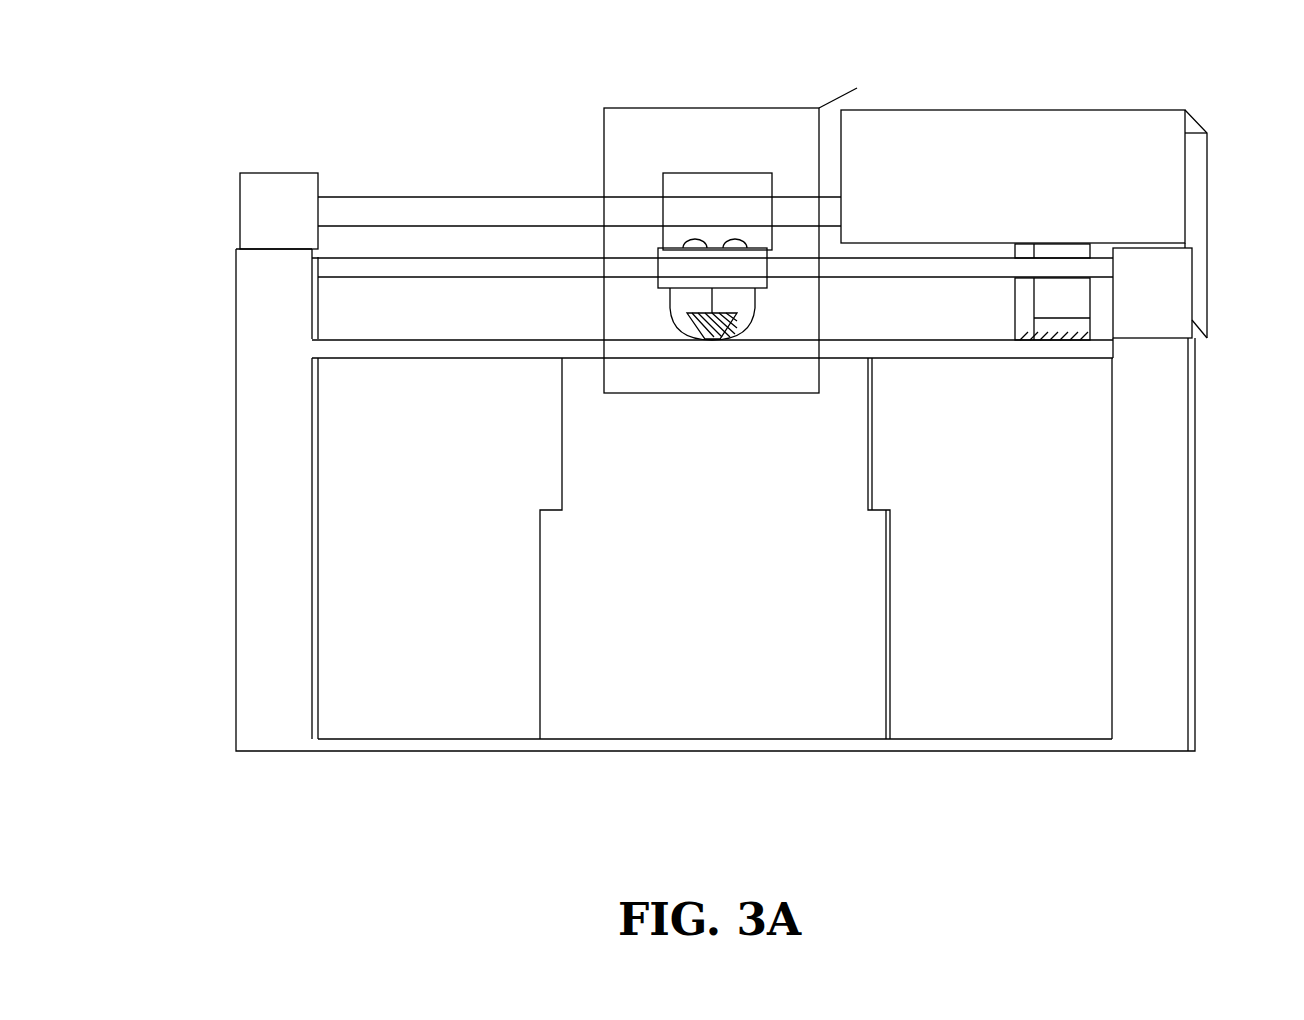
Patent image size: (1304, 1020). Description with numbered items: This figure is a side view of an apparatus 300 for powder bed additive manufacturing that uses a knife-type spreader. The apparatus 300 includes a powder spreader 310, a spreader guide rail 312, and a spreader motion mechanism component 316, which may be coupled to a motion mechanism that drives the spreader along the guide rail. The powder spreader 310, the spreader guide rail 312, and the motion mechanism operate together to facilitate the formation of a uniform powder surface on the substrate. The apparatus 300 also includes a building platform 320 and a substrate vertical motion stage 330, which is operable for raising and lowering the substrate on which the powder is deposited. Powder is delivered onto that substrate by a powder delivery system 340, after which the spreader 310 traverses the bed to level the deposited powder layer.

The apparatus 300 is at (1155, 42).
The powder spreader 310 is at (716, 205).
The spreader guide rail 312 is at (970, 268).
The spreader motion mechanism component 316 is at (363, 215).
The building platform 320 is at (366, 349).
The substrate vertical motion stage 330 is at (733, 612).
The powder delivery system 340 is at (1023, 168).